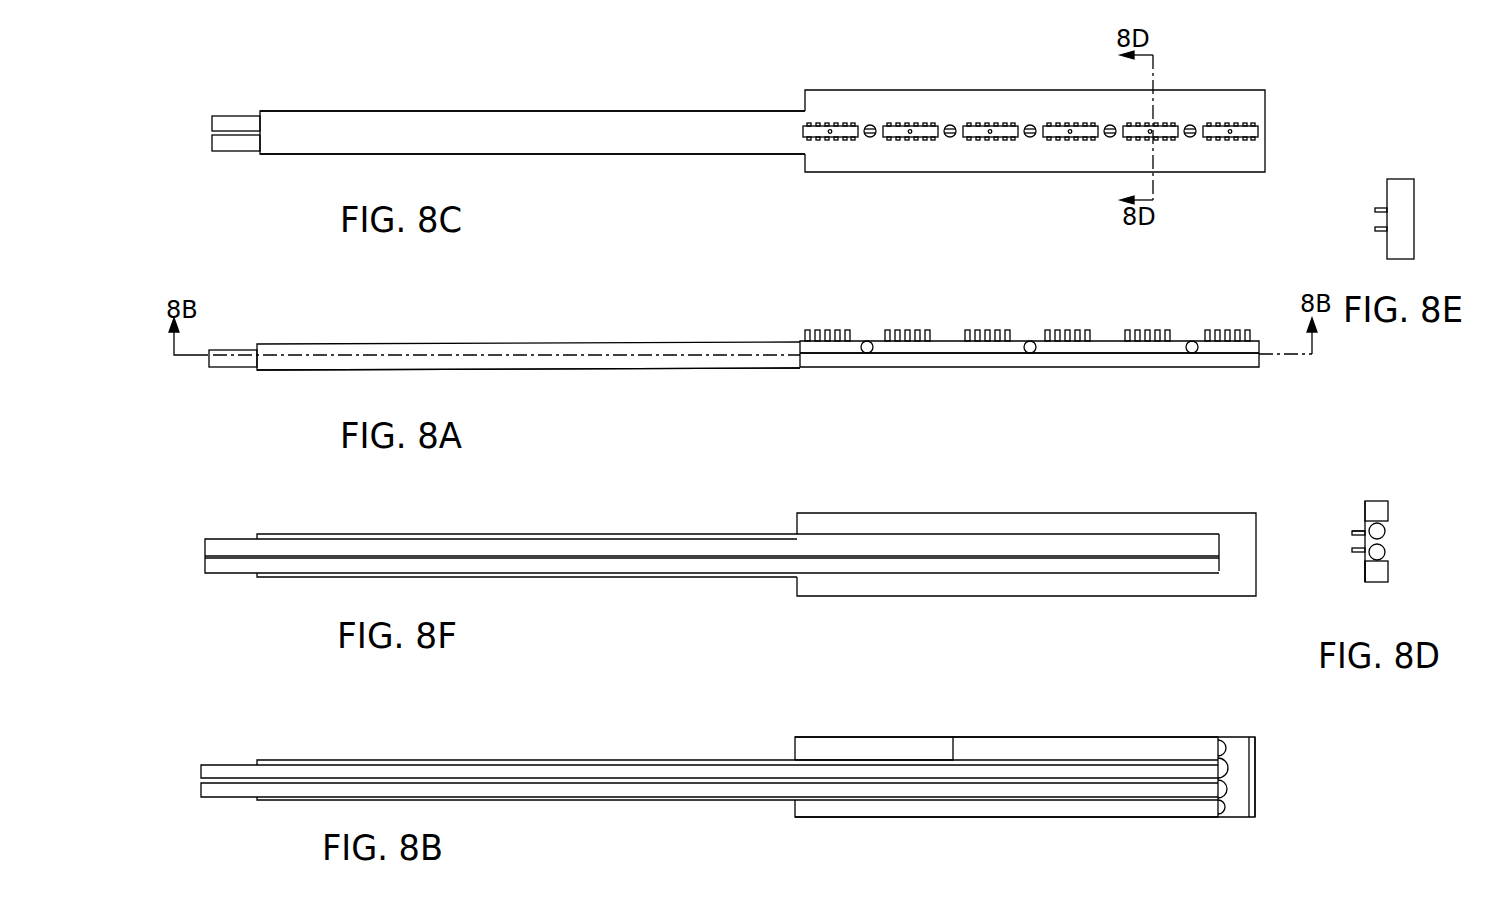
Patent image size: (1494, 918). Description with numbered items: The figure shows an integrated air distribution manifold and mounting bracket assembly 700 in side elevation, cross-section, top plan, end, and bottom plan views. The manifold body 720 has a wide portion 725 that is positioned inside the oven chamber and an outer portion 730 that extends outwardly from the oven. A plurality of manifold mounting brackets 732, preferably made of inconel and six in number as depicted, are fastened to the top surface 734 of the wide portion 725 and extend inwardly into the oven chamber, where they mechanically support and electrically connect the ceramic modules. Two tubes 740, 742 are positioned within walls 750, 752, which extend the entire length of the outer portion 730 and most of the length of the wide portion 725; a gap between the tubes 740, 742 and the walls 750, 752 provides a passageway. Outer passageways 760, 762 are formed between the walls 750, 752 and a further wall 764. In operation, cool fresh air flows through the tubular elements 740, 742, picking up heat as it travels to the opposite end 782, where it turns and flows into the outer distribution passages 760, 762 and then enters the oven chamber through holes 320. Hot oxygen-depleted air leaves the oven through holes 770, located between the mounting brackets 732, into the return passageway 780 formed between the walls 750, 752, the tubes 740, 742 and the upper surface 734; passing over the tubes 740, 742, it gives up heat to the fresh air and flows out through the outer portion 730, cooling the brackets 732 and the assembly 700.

In FIG. 8A, the holes 320 is at (1032, 340).
In FIG. 8C, the manifold assembly 700 is at (862, 185).
In FIG. 8A, the manifold assembly 700 is at (936, 388).
In FIG. 8C, the manifold body 720 is at (1012, 168).
In FIG. 8A, the manifold body 720 is at (818, 368).
In FIG. 8A, the wide portion 725 is at (1040, 368).
In FIG. 8F, the wide portion 725 is at (1105, 590).
In FIG. 8B, the wide portion 725 is at (1068, 745).
In FIG. 8C, the outer portion 730 is at (543, 147).
In FIG. 8A, the outer portion 730 is at (632, 368).
In FIG. 8F, the outer portion 730 is at (635, 572).
In FIG. 8B, the outer portion 730 is at (655, 800).
In FIG. 8C, the manifold mounting bracket 732 is at (910, 123).
In FIG. 8E, the manifold mounting bracket 732 is at (1379, 234).
In FIG. 8A, the manifold mounting bracket 732 is at (820, 330).
In FIG. 8D, the manifold mounting bracket 732 is at (1358, 552).
In FIG. 8A, the top surface 734 is at (770, 340).
In FIG. 8C, the tube 740 is at (232, 152).
In FIG. 8A, the tube 740 is at (230, 370).
In FIG. 8D, the tube 740 is at (1387, 552).
In FIG. 8C, the tube 742 is at (232, 118).
In FIG. 8D, the tube 742 is at (1387, 530).
In FIG. 8C, the wall 750 is at (743, 154).
In FIG. 8A, the wall 750 is at (540, 366).
In FIG. 8F, the wall 750 is at (560, 580).
In FIG. 8D, the wall 750 is at (1375, 582).
In FIG. 8B, the wall 750 is at (548, 800).
In FIG. 8C, the wall 752 is at (738, 104).
In FIG. 8F, the wall 752 is at (548, 536).
In FIG. 8D, the wall 752 is at (1375, 500).
In FIG. 8B, the wall 752 is at (552, 760).
In FIG. 8D, the outer passageway 760 is at (1385, 502).
In FIG. 8B, the outer passageway 760 is at (905, 742).
In FIG. 8D, the outer passageway 762 is at (1389, 575).
In FIG. 8B, the outer passageway 762 is at (920, 815).
In FIG. 8B, the wall 764 is at (1018, 738).
In FIG. 8C, the holes 770 is at (871, 124).
In FIG. 8D, the return passageway 780 is at (1371, 530).
In FIG. 8B, the opposite end 782 is at (1240, 812).